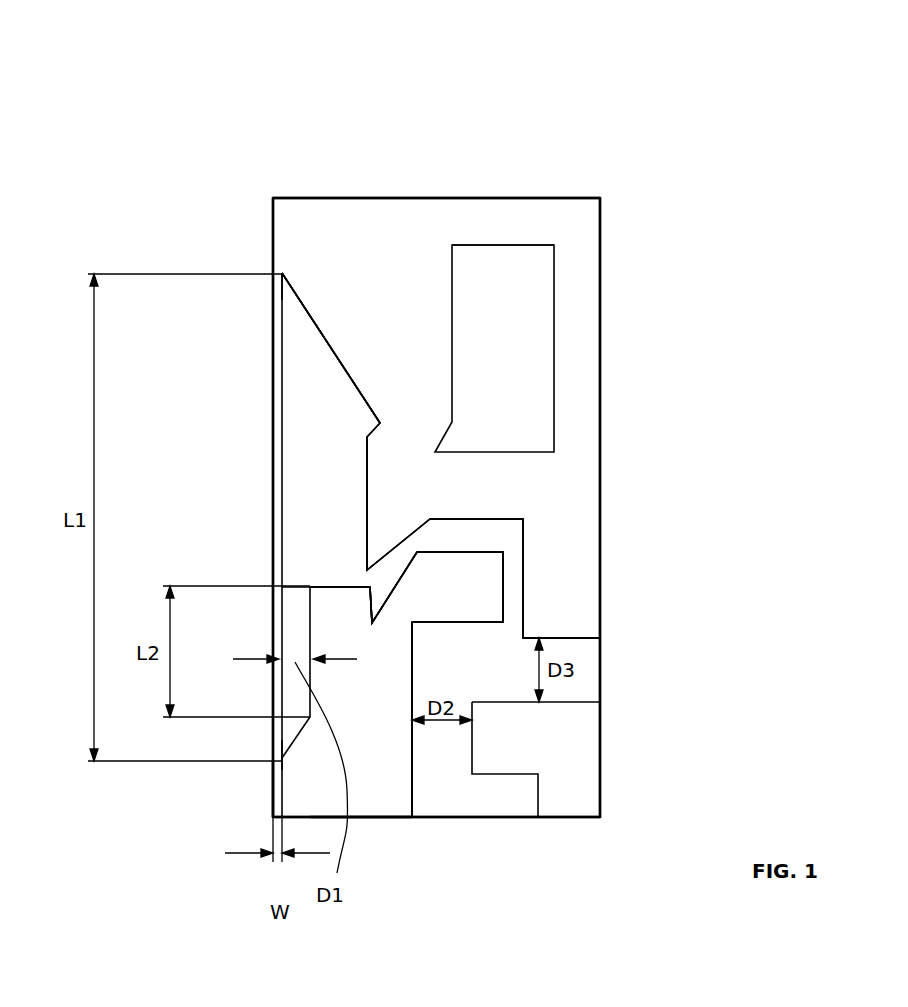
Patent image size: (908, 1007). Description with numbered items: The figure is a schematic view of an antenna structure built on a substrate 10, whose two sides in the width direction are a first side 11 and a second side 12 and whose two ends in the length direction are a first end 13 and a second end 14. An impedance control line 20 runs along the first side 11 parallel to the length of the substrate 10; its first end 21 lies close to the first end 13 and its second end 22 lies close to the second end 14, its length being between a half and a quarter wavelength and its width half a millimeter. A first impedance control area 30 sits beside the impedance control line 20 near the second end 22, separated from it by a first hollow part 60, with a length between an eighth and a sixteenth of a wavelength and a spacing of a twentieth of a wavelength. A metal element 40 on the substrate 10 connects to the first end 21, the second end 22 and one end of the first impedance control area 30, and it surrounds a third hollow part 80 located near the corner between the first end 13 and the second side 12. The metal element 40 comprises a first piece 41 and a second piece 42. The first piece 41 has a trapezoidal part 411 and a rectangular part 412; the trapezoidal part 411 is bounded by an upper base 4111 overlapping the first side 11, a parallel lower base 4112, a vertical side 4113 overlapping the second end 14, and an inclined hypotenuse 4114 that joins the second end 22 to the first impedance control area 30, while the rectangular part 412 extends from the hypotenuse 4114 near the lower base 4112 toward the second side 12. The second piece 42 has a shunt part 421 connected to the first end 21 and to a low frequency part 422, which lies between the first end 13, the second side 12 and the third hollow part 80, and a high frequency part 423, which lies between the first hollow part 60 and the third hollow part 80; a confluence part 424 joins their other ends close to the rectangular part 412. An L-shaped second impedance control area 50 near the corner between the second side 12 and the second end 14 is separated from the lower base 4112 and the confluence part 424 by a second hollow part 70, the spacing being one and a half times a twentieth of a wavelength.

The substrate 10 is at (260, 243).
The first side 11 is at (272, 403).
The second side 12 is at (601, 797).
The first end 13 is at (332, 197).
The second end 14 is at (598, 820).
The impedance control line 20 is at (279, 443).
The first end 21 is at (274, 275).
The second end 22 is at (282, 758).
The first impedance control area 30 is at (340, 636).
The metal element 40 is at (590, 92).
The first piece 41 is at (548, 897).
The trapezoidal part 411 is at (398, 783).
The rectangular part 412 is at (487, 602).
The upper base 4111 is at (273, 793).
The lower base 4112 is at (413, 768).
The vertical side 4113 is at (377, 818).
The hypotenuse 4114 is at (395, 583).
The second piece 42 is at (587, 128).
The shunt part 421 is at (370, 215).
The low frequency part 422 is at (502, 212).
The high frequency part 423 is at (396, 318).
The confluence part 424 is at (557, 575).
The second impedance control area 50 is at (587, 745).
The first hollow part 60 is at (305, 508).
The second hollow part 70 is at (601, 680).
The third hollow part 80 is at (532, 317).